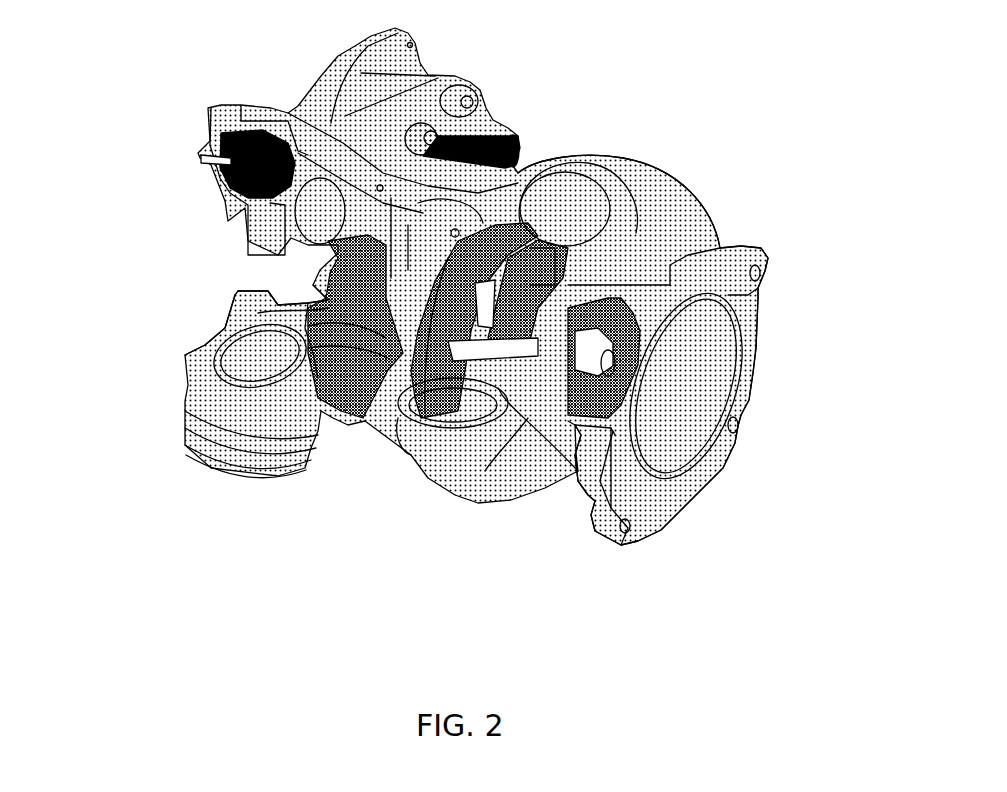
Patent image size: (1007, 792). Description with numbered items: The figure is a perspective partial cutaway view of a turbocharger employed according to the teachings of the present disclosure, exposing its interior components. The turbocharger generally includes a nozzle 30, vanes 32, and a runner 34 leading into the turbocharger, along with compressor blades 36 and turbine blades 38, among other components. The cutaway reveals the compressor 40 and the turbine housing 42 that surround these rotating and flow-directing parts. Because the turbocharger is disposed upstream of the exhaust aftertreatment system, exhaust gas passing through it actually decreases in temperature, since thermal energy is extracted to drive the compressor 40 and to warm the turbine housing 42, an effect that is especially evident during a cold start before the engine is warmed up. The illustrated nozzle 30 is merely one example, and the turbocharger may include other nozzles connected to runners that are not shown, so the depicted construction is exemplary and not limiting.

The nozzle 30 is at (352, 378).
The vanes 32 is at (478, 232).
The runner 34 is at (427, 398).
The compressor blades 36 is at (315, 286).
The turbine blades 38 is at (575, 320).
The compressor 40 is at (325, 292).
The turbine housing 42 is at (670, 187).